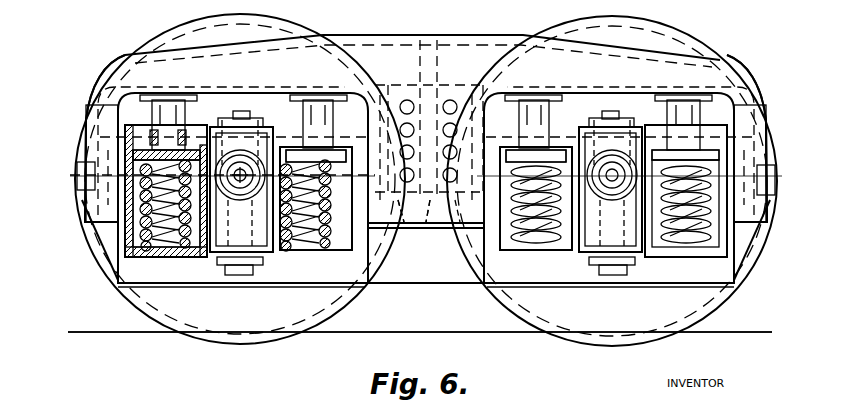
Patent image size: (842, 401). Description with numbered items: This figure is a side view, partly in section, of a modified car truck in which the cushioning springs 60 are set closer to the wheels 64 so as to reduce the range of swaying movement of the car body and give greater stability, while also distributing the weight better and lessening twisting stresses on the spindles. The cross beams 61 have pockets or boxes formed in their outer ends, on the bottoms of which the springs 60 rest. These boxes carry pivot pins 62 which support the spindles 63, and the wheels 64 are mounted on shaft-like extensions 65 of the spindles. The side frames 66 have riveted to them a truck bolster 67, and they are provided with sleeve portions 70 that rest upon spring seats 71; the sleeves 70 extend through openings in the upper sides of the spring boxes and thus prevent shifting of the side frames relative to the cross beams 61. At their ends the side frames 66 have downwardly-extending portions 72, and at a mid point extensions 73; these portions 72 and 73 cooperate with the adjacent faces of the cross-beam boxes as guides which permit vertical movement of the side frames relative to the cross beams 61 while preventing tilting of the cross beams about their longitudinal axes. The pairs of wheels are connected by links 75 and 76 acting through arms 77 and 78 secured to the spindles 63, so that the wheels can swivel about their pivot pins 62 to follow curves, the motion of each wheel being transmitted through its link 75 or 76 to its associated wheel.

The cushioning springs 60 is at (143, 230).
The cross beams 61 is at (266, 265).
The pivot pins 62 is at (238, 277).
The spindles 63 is at (212, 255).
The wheels 64 is at (297, 305).
The shaft-like extensions 65 is at (575, 298).
The side frames 66 is at (455, 43).
The truck bolster 67 is at (447, 100).
The sleeve portions 70 is at (167, 107).
The spring seats 71 is at (197, 150).
The downwardly-extending portions 72 is at (98, 210).
The extensions 73 is at (418, 225).
The link 75 is at (77, 167).
The link 76 is at (765, 177).
The arms 77 is at (77, 173).
The arms 78 is at (772, 185).